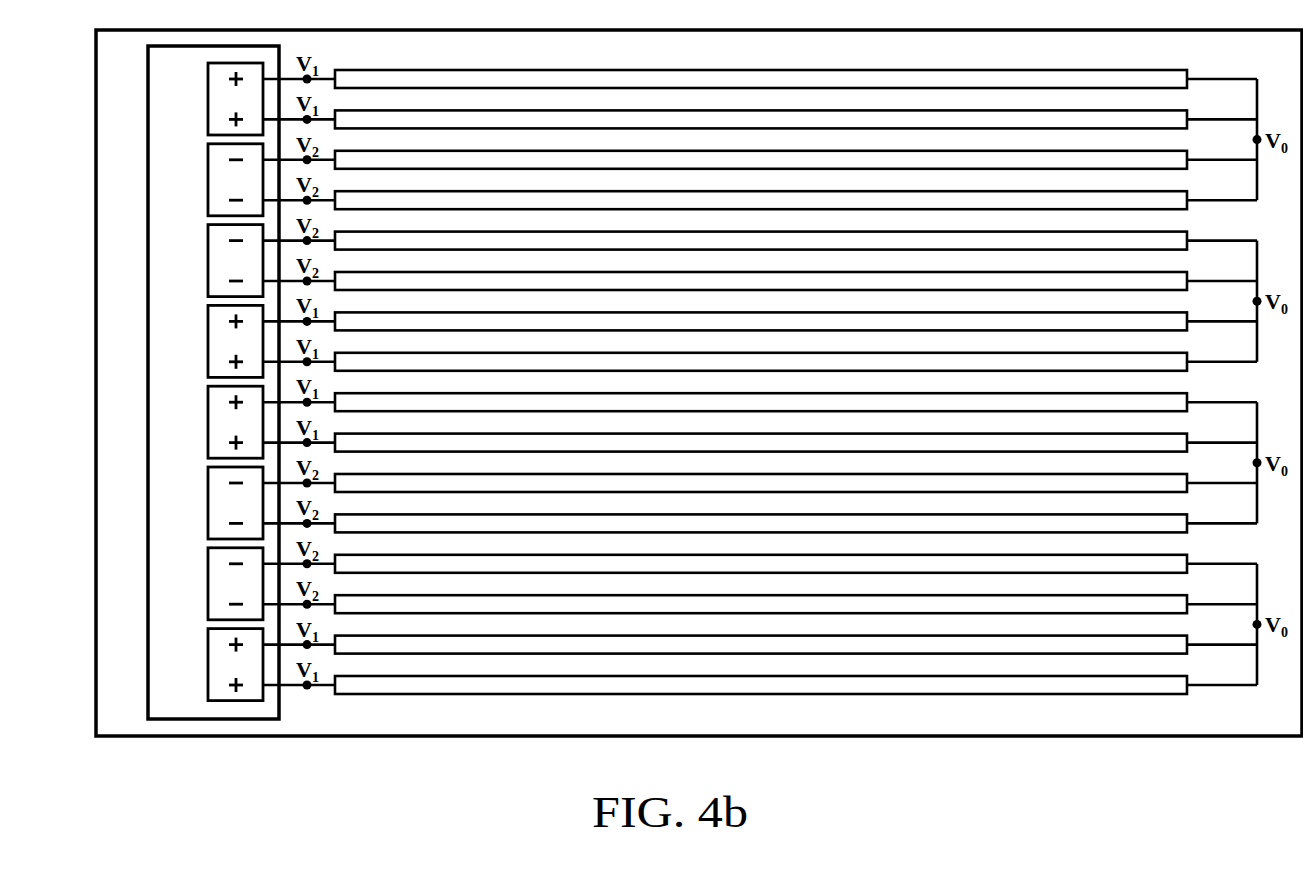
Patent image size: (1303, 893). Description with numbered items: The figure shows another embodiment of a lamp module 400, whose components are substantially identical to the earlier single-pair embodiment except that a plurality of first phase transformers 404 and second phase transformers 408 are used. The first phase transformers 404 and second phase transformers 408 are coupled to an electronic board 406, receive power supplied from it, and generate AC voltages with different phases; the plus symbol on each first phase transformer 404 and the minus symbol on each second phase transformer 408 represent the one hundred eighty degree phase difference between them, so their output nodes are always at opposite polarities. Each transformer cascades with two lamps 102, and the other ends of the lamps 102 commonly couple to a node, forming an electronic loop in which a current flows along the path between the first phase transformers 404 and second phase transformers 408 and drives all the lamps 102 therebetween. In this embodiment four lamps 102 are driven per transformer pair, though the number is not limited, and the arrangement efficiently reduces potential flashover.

The lamp module 400 is at (377, 736).
The electronic board 406 is at (182, 708).
The first phase transformer 404 is at (208, 100).
The second phase transformer 408 is at (208, 181).
The lamp 102 is at (1112, 695).